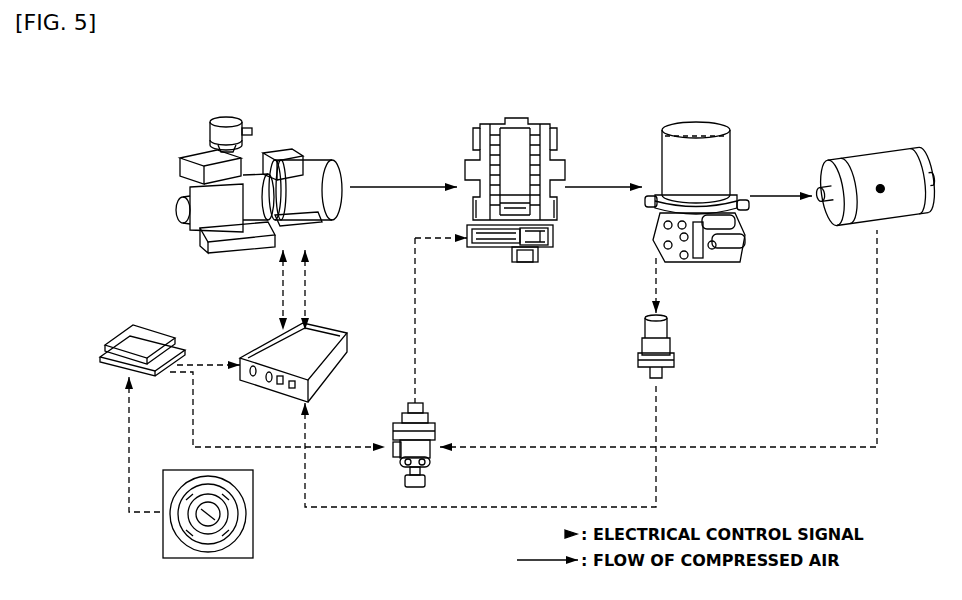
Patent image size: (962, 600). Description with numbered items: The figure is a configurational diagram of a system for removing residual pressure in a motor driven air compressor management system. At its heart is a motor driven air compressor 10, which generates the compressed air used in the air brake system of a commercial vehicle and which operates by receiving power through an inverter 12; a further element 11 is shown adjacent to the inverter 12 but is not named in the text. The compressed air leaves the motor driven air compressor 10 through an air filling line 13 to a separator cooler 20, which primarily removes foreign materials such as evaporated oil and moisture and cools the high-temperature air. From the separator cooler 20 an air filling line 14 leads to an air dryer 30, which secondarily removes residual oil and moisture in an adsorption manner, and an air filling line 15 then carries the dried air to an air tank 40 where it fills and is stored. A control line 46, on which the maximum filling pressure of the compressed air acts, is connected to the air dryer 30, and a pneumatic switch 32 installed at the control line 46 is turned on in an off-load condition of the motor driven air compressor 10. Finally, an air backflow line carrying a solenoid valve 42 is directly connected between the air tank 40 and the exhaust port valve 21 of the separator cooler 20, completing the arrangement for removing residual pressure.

The motor driven air compressor 10 is at (306, 172).
The sensor 11 is at (141, 334).
The inverter 12 is at (262, 337).
The air filling line 13 is at (400, 187).
The air filling line 14 is at (605, 187).
The air filling line 15 is at (772, 196).
The separator cooler 20 is at (533, 128).
The exhaust port valve 21 is at (493, 240).
The air dryer 30 is at (692, 128).
The pneumatic switch 32 is at (668, 328).
The air tank 40 is at (867, 162).
The solenoid valve 42 is at (432, 427).
The control line 46 is at (656, 282).